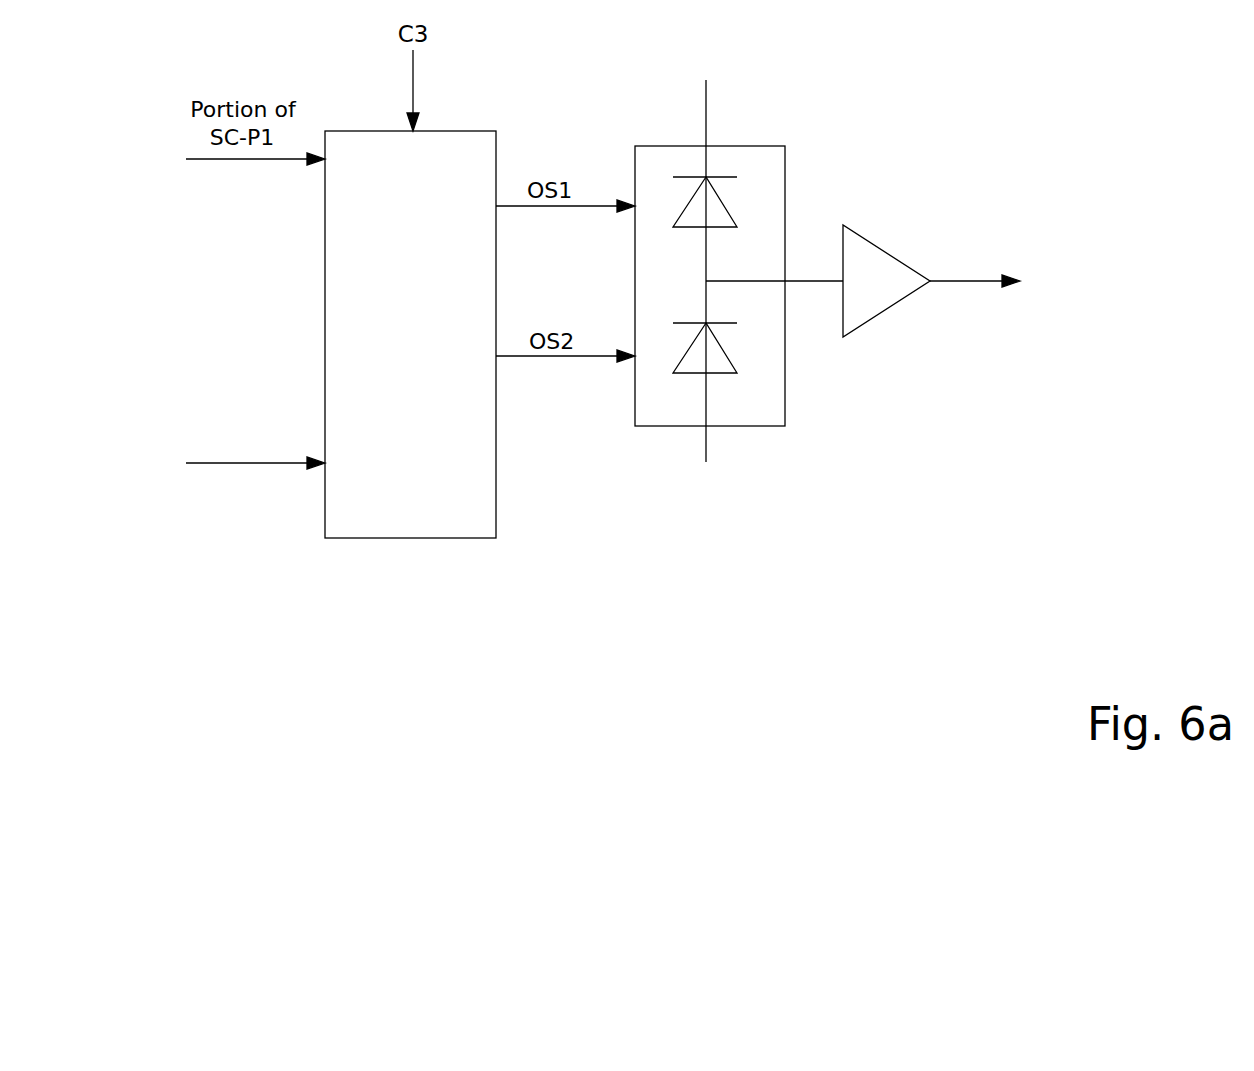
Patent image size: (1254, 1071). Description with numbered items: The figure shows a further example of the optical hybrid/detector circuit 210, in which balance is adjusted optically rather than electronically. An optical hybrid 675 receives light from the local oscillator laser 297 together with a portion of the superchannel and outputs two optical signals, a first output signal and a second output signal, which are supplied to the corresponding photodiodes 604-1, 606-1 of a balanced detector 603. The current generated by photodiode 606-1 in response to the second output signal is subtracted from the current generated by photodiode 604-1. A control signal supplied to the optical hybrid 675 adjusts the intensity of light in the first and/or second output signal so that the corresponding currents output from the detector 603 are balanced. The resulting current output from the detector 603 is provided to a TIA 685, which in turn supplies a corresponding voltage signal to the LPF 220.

The optical hybrid 675 is at (412, 538).
The balanced detector 603 is at (767, 426).
The photodiode 604-1 is at (706, 177).
The photodiode 606-1 is at (693, 373).
The TIA 685 is at (888, 248).
The LPF 220 is at (1002, 284).
The local oscillator laser 297 is at (255, 432).
The optical hybrid/detector circuit 210 is at (264, 794).